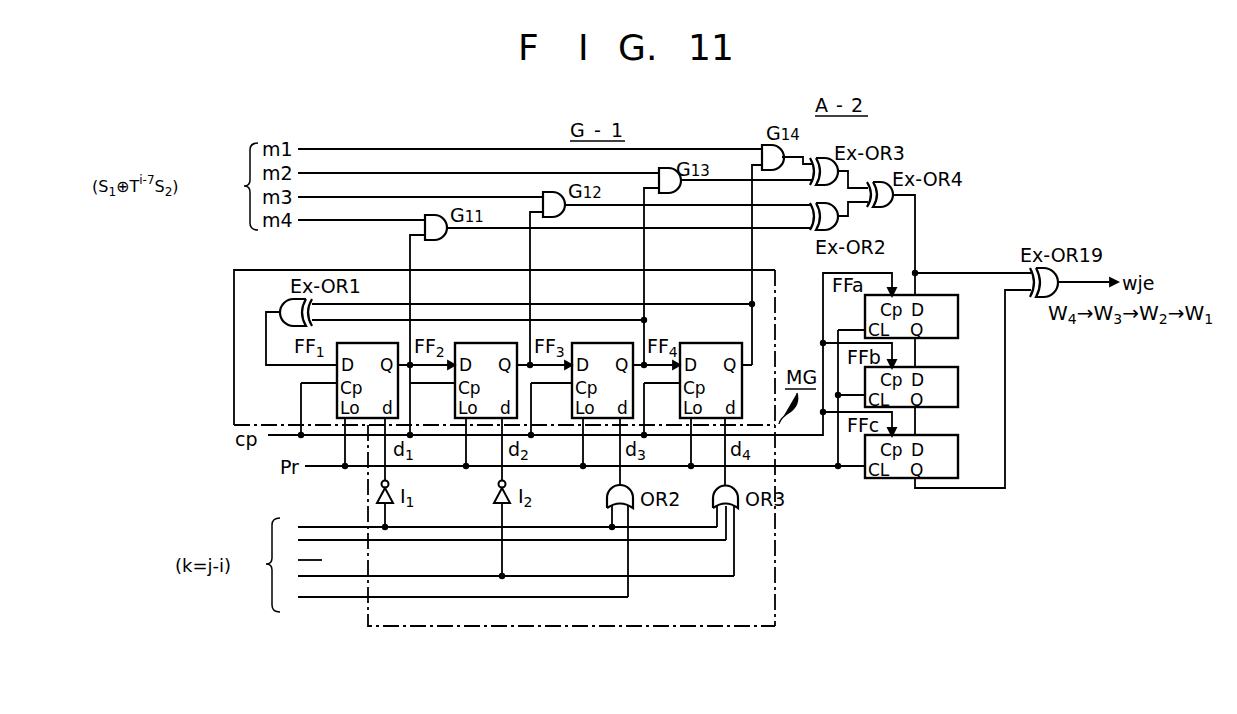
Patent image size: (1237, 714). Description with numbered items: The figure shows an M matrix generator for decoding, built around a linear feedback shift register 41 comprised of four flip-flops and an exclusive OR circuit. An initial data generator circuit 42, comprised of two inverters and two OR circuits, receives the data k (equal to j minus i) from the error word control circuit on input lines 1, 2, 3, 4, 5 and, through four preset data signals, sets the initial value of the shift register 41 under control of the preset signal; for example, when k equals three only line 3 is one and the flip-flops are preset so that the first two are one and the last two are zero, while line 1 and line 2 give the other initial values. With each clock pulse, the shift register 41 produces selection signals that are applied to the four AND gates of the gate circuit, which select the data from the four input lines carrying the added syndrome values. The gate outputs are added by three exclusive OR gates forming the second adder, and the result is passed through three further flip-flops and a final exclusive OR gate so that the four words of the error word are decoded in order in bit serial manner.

The linear feedback shift register 41 is at (705, 270).
The initial data generator circuit 42 is at (777, 530).
The line 1 is at (497, 527).
The line 2 is at (501, 541).
The line 3 is at (299, 560).
The line 4 is at (505, 576).
The line 5 is at (452, 597).